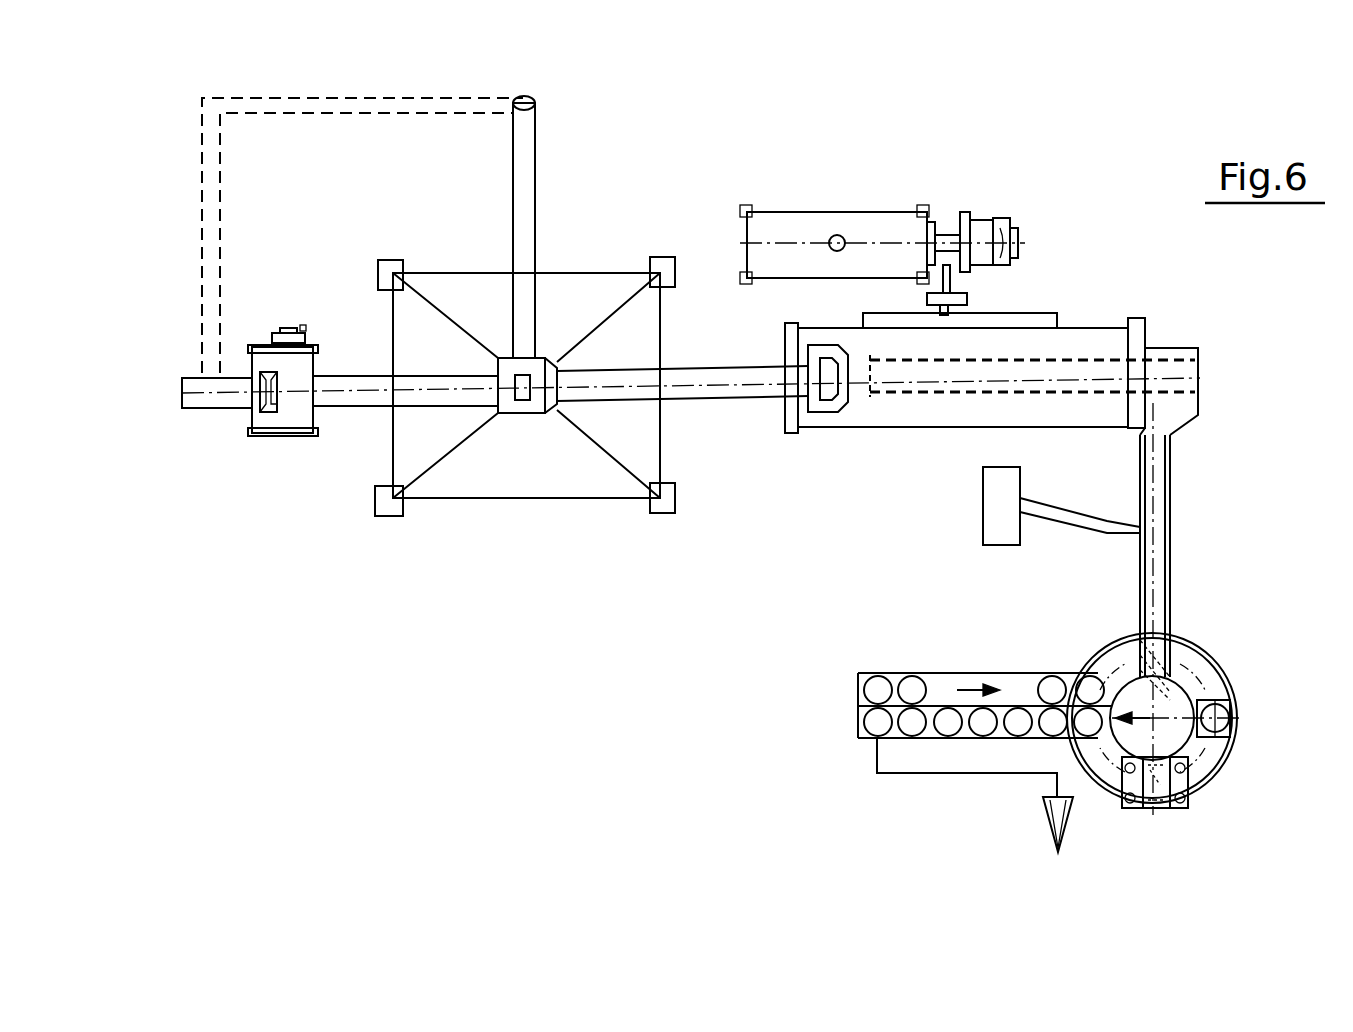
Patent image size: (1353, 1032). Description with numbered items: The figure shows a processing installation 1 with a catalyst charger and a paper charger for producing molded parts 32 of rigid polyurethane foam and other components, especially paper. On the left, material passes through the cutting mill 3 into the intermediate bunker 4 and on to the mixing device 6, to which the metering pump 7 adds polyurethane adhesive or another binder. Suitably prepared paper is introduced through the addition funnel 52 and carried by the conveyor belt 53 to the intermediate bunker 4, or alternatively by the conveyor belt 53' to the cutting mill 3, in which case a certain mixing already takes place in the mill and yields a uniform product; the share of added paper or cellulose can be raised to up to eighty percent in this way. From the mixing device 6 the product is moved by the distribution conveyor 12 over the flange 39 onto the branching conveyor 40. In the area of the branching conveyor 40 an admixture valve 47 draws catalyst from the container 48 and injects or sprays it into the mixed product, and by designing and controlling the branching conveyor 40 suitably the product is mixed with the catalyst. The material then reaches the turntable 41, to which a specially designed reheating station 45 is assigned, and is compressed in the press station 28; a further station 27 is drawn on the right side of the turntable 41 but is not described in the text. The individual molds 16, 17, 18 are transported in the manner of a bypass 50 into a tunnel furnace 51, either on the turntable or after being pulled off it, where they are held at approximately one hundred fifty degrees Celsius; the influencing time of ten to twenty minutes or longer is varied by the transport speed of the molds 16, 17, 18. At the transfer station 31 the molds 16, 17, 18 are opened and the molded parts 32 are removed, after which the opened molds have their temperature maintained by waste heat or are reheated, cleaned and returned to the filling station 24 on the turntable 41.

The processing installation 1 is at (607, 753).
The cutting mill 3 is at (272, 420).
The intermediate bunker 4 is at (518, 477).
The mixing device 6 is at (903, 394).
The metering pump 7 is at (980, 240).
The distribution conveyor 12 is at (1083, 372).
The individual mold 16 is at (877, 725).
The individual mold 17 is at (905, 688).
The individual mold 18 is at (1040, 673).
The filling station 24 is at (1185, 640).
The roller 27 is at (1237, 731).
The press station 28 is at (1168, 810).
The transfer station 31 is at (875, 736).
The molded part 32 is at (1057, 817).
The flange 39 is at (1183, 405).
The branching conveyor 40 is at (1160, 467).
The turntable 41 is at (1235, 688).
The reheating station 45 is at (1082, 670).
The admixture valve 47 is at (1143, 527).
The container 48 is at (997, 502).
The bypass 50 is at (818, 757).
The tunnel furnace 51 is at (932, 734).
The addition funnel 52 is at (532, 97).
The conveyor belt 53 is at (573, 229).
The conveyor belt 53' is at (310, 235).